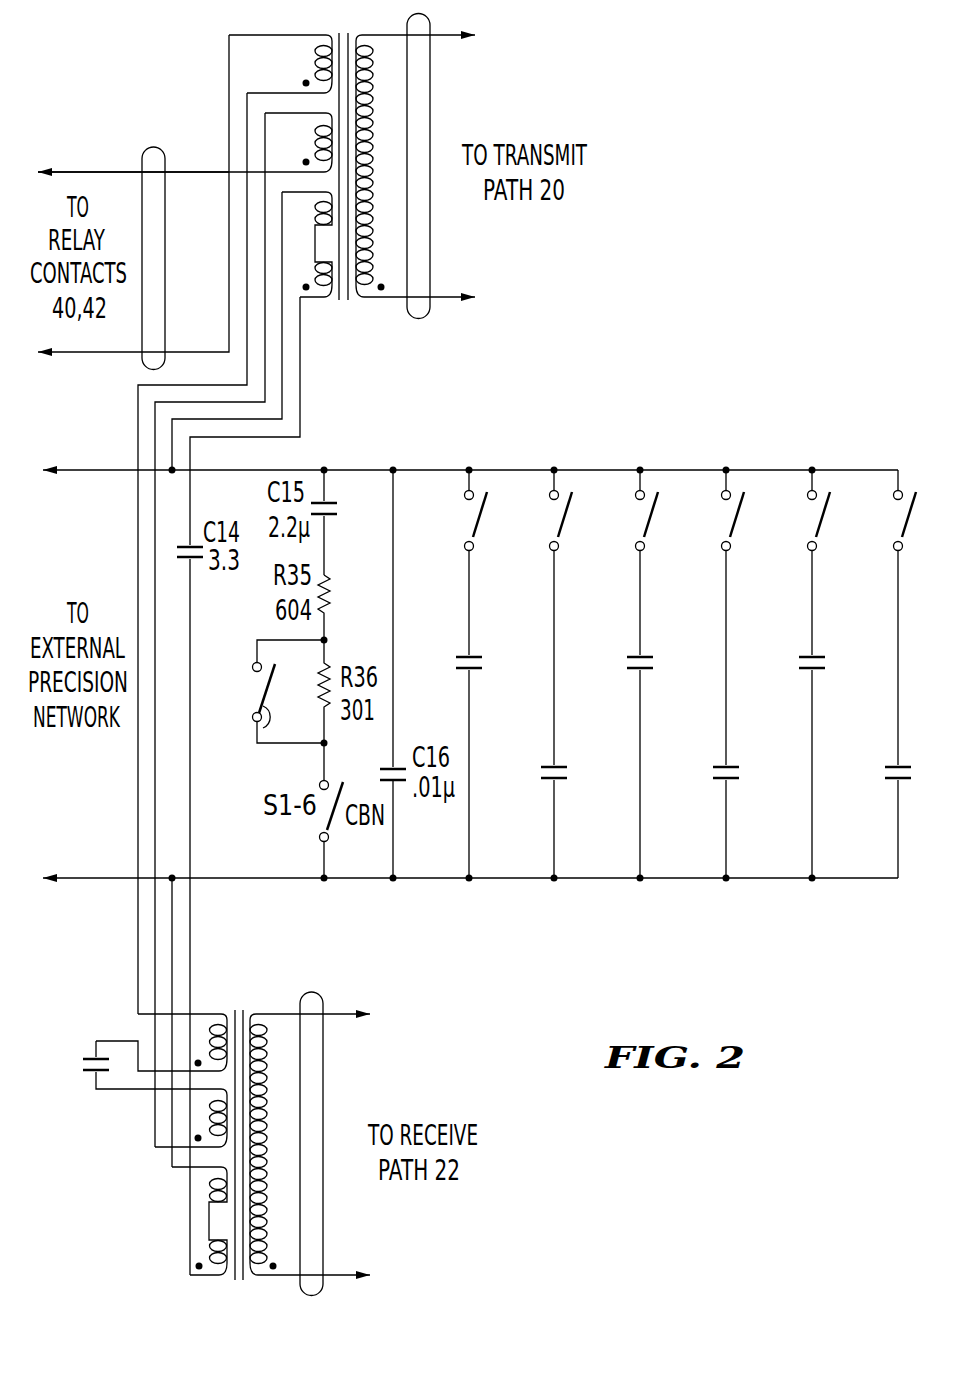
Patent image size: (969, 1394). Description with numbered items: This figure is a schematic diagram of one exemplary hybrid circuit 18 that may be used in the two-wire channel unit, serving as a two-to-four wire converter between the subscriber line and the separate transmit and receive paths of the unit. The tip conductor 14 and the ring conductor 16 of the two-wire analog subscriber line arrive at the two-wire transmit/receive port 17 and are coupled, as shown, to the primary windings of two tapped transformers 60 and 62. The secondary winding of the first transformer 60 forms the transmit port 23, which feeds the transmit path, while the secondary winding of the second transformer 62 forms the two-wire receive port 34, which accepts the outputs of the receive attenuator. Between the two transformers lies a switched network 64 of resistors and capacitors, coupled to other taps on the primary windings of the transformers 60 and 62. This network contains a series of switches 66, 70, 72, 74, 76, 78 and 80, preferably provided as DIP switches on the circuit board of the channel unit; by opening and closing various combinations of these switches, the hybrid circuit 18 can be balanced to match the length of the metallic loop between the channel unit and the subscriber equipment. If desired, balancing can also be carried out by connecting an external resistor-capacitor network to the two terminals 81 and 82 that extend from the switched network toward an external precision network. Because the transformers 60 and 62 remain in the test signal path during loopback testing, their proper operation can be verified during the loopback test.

The tip conductor 14 is at (196, 170).
The ring conductor 16 is at (194, 350).
The two-wire transmit/receive port 17 is at (147, 150).
The hybrid circuit 18 is at (650, 259).
The transmit port 23 is at (429, 310).
The two-wire receive port 34 is at (316, 990).
The tapped transformer 60 is at (352, 321).
The tapped transformer 62 is at (240, 1003).
The switched network 64 is at (588, 454).
The switch 66 is at (258, 745).
The switch 70 is at (481, 537).
The switch 72 is at (566, 537).
The switch 74 is at (652, 537).
The switch 76 is at (738, 537).
The switch 78 is at (824, 537).
The switch 80 is at (914, 490).
The terminal 81 is at (92, 468).
The terminal 82 is at (90, 876).